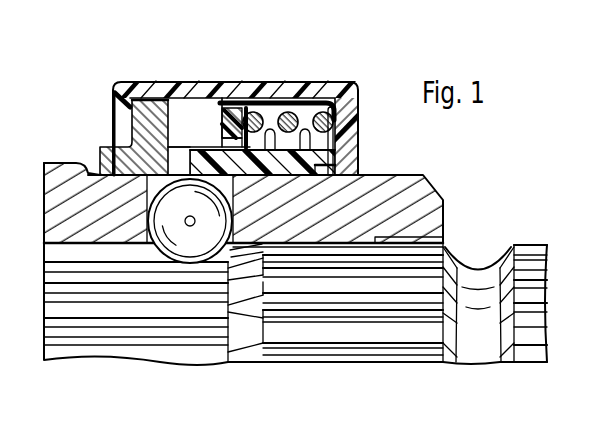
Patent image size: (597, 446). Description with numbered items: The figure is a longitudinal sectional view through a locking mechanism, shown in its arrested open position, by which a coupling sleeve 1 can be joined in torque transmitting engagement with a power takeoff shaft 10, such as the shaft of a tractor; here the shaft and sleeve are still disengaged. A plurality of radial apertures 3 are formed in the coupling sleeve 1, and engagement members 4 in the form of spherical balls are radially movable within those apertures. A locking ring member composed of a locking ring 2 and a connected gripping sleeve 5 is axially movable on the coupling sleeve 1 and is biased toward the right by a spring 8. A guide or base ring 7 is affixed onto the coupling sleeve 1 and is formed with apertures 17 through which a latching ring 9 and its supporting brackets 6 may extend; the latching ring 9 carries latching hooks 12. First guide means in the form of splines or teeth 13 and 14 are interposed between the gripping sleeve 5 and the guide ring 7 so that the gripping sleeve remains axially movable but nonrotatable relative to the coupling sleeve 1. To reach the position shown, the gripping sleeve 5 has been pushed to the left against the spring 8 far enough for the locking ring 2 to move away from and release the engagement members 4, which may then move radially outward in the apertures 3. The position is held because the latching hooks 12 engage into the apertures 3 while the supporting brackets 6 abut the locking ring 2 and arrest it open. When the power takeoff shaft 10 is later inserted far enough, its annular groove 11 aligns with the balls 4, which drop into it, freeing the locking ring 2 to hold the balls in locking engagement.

The coupling sleeve 1 is at (61, 163).
The locking ring 2 is at (130, 150).
The radial apertures 3 is at (150, 190).
The engagement members 4 is at (165, 218).
The gripping sleeve 5 is at (270, 108).
The supporting brackets 6 is at (178, 150).
The guide ring 7 is at (218, 103).
The spring 8 is at (333, 142).
The latching ring 9 is at (317, 165).
The power takeoff shaft 10 is at (332, 335).
The annular groove 11 is at (475, 267).
The latching hooks 12 is at (267, 112).
The splines or teeth 13 is at (237, 107).
The splines or teeth 14 is at (315, 103).
The apertures 17 is at (218, 137).